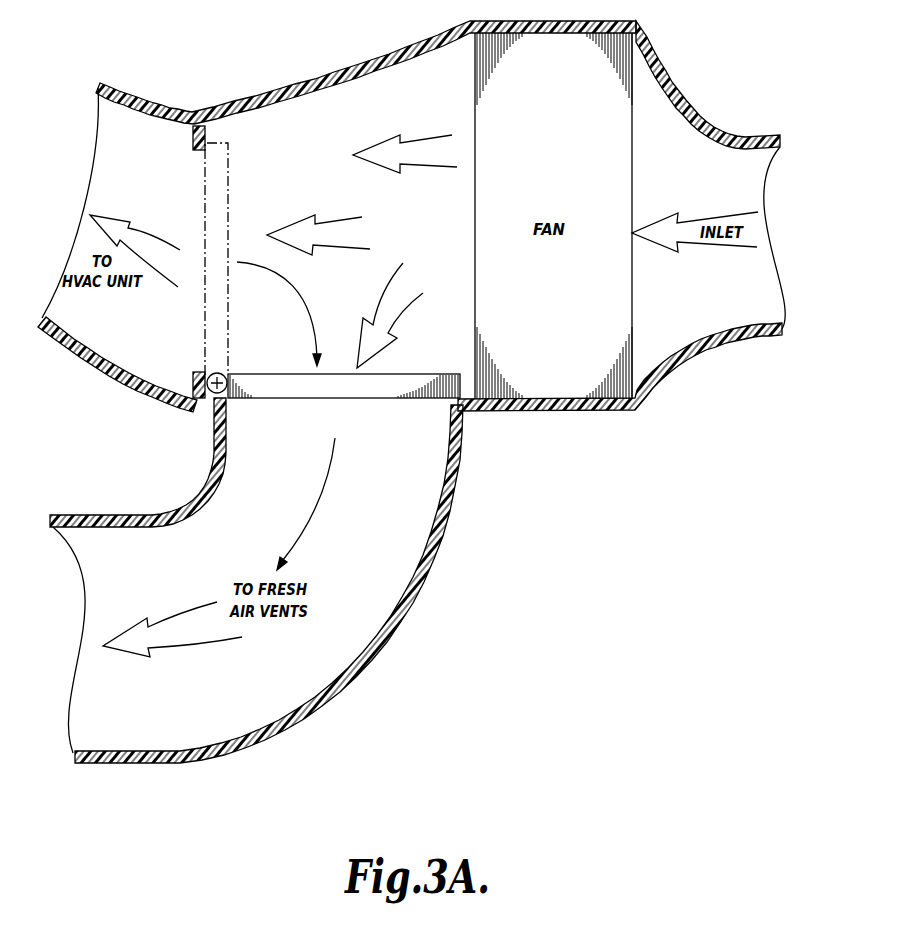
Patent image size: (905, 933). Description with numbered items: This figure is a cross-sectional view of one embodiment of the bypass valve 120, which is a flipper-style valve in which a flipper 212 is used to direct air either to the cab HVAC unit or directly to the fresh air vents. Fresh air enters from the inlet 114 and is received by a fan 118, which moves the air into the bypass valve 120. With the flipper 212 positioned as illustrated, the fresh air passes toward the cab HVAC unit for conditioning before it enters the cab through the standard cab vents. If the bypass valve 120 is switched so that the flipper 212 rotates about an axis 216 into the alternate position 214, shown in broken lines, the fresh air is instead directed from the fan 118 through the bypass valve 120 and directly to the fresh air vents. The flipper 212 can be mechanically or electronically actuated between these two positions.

The inlet 114 is at (740, 160).
The fan 118 is at (627, 58).
The bypass valve 120 is at (343, 120).
The flipper 212 is at (410, 400).
The position 214 is at (230, 158).
The axis 216 is at (205, 408).